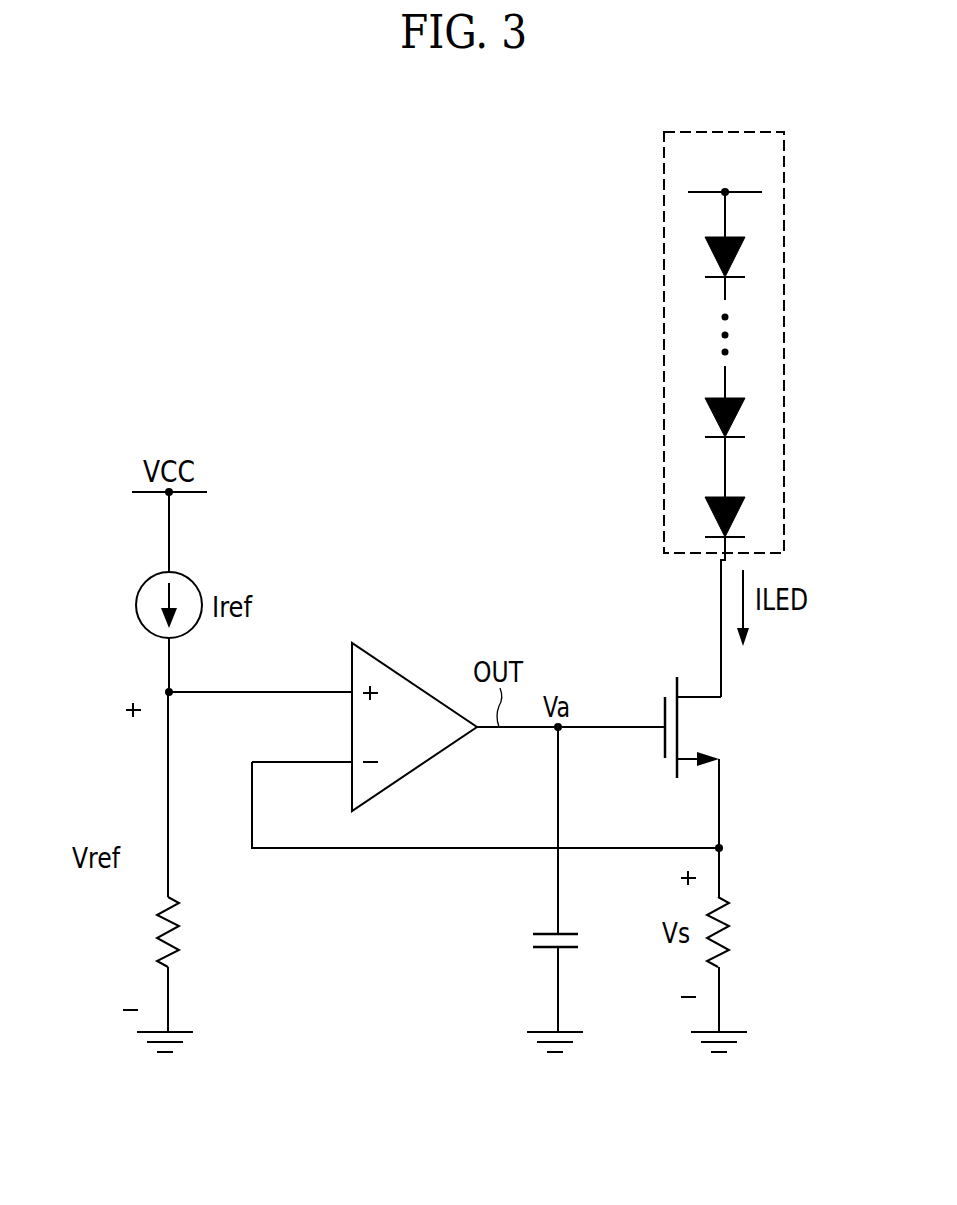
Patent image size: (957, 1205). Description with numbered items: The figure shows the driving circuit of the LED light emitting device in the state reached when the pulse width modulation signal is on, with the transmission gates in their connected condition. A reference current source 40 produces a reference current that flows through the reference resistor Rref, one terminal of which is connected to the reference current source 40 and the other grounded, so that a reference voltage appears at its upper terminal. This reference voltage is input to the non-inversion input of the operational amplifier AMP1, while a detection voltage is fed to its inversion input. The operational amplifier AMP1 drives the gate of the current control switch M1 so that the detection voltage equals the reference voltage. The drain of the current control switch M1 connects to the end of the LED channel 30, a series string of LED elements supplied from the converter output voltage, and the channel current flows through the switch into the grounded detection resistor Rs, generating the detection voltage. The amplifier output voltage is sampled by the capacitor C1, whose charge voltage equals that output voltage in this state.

The LED channel 30 is at (784, 279).
The reference current source 40 is at (136, 603).
The current control switch M1 is at (711, 727).
The operational amplifier AMP1 is at (435, 727).
The capacitor C1 is at (535, 938).
The detection resistor Rs is at (737, 932).
The reference resistor Rref is at (196, 932).